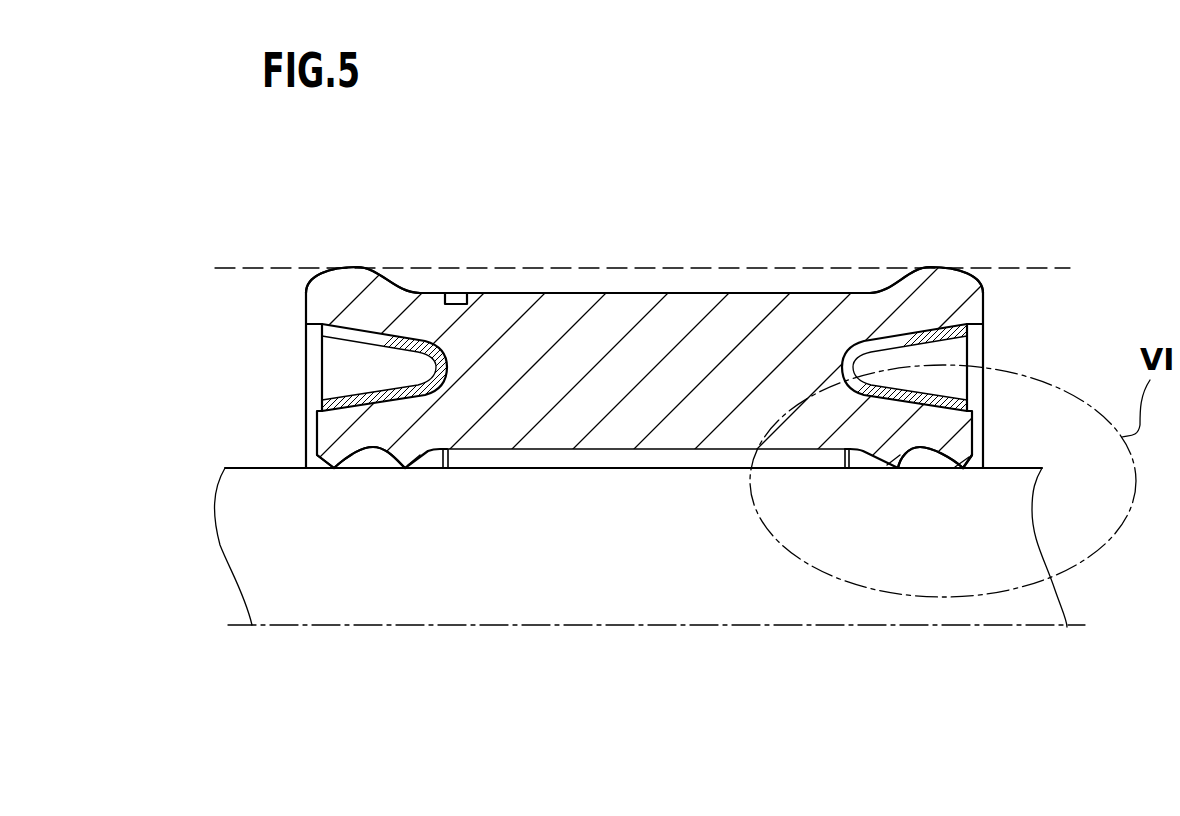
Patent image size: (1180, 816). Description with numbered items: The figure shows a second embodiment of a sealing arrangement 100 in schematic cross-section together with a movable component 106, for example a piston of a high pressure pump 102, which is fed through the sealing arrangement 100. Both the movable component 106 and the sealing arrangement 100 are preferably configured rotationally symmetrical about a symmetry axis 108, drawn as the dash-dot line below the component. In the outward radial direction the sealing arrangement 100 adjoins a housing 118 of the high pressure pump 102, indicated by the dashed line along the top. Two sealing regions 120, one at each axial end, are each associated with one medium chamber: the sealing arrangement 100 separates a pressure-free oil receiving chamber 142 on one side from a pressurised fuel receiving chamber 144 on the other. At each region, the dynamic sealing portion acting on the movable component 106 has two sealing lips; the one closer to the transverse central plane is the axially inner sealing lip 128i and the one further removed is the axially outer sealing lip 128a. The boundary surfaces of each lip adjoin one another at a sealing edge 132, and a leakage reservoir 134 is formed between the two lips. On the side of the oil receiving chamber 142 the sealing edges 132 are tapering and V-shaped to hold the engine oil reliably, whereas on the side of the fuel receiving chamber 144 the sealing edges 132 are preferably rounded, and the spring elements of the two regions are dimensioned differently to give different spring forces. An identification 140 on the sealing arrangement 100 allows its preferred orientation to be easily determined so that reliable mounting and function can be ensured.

The sealing arrangement 100 is at (797, 196).
The high pressure pump 102 is at (735, 180).
The movable component 106 is at (528, 590).
The symmetry axis 108 is at (617, 627).
The housing 118 is at (1013, 268).
The sealing region 120 is at (325, 262).
The axially outer sealing lip 128a is at (346, 460).
The axially inner sealing lip 128i is at (414, 460).
The sealing edge 132 is at (335, 468).
The leakage reservoir 134 is at (380, 465).
The identification 140 is at (457, 298).
The oil receiving chamber 142 is at (266, 382).
The fuel receiving chamber 144 is at (1052, 356).